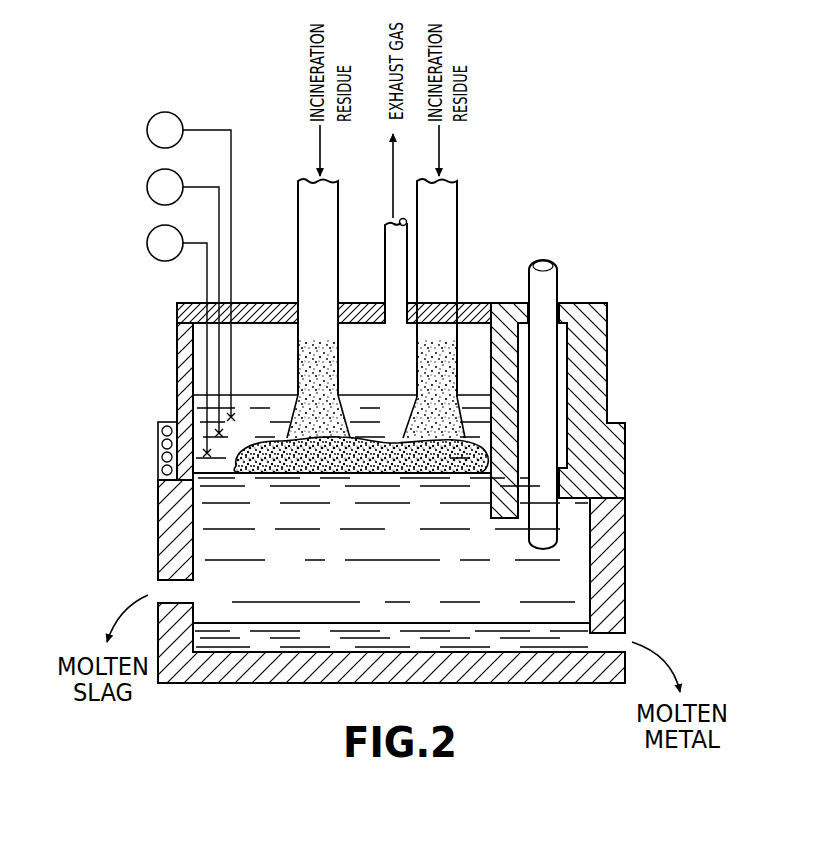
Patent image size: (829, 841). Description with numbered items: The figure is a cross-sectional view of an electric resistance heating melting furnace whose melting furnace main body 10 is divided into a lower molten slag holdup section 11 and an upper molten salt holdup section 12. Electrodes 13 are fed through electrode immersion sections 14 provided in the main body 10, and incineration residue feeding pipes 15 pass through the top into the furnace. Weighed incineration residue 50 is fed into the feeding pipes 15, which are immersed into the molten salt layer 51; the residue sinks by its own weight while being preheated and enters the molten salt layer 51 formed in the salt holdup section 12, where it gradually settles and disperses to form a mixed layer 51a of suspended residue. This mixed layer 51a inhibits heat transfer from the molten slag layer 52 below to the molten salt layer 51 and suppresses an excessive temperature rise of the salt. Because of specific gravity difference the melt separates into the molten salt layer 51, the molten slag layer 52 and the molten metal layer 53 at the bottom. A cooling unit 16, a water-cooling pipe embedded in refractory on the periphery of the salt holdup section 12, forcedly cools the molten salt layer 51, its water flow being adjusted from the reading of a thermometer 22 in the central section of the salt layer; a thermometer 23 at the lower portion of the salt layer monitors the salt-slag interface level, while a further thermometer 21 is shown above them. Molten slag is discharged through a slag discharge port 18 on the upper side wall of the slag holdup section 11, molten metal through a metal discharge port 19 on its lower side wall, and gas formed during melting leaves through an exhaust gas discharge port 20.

The melting furnace main body 10 is at (145, 486).
The molten slag holdup section 11 is at (158, 553).
The molten salt holdup section 12 is at (177, 392).
The electrode 13 is at (545, 285).
The electrode immersion section 14 is at (607, 337).
The incineration residue feeding pipe 15 is at (332, 203).
The cooling unit 16 is at (158, 433).
The slag discharge port 18 is at (173, 595).
The metal discharge port 19 is at (612, 644).
The exhaust gas discharge port 20 is at (393, 263).
The thermocouple T1 21 is at (152, 118).
The thermometer 22 is at (152, 174).
The thermometer 23 is at (152, 230).
The incineration residue 50 is at (313, 368).
The molten salt layer 51 is at (273, 428).
The mixed layer 51a is at (393, 457).
The molten slag layer 52 is at (390, 498).
The molten metal layer 53 is at (273, 632).